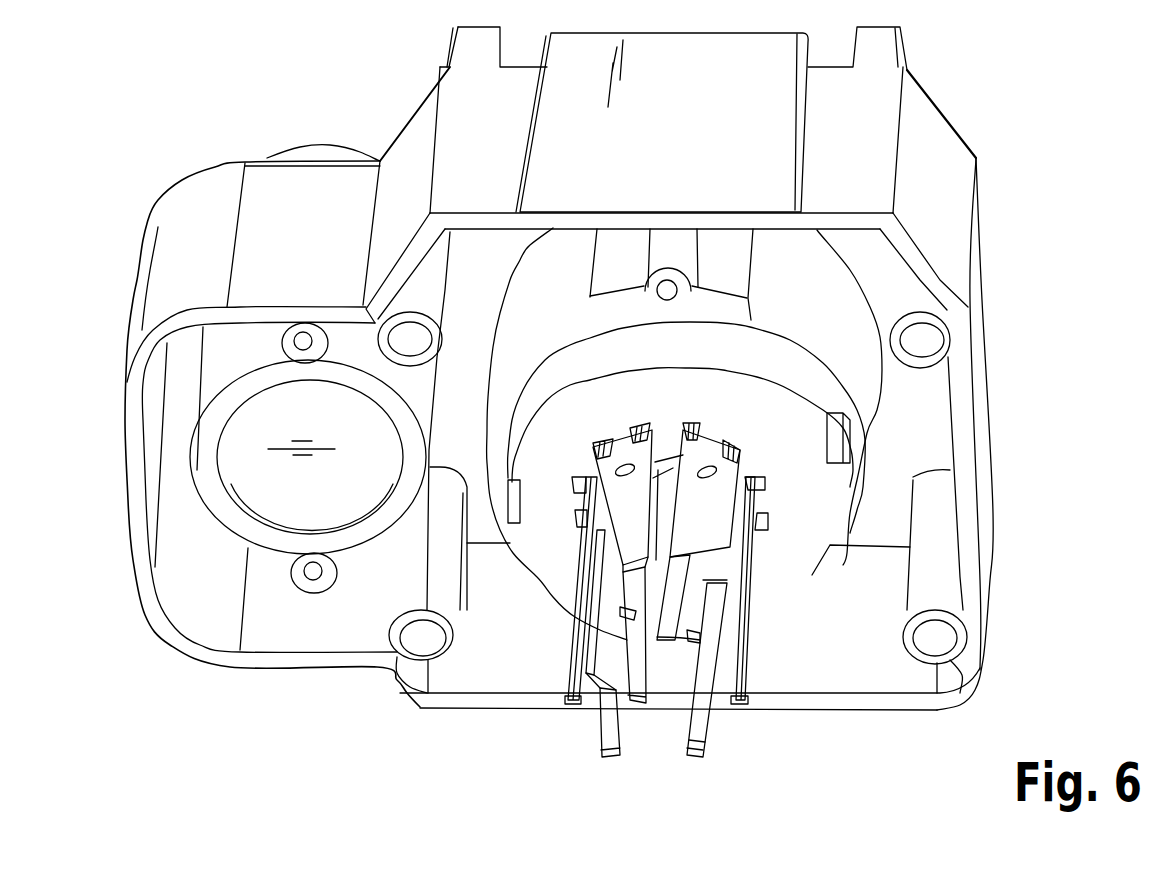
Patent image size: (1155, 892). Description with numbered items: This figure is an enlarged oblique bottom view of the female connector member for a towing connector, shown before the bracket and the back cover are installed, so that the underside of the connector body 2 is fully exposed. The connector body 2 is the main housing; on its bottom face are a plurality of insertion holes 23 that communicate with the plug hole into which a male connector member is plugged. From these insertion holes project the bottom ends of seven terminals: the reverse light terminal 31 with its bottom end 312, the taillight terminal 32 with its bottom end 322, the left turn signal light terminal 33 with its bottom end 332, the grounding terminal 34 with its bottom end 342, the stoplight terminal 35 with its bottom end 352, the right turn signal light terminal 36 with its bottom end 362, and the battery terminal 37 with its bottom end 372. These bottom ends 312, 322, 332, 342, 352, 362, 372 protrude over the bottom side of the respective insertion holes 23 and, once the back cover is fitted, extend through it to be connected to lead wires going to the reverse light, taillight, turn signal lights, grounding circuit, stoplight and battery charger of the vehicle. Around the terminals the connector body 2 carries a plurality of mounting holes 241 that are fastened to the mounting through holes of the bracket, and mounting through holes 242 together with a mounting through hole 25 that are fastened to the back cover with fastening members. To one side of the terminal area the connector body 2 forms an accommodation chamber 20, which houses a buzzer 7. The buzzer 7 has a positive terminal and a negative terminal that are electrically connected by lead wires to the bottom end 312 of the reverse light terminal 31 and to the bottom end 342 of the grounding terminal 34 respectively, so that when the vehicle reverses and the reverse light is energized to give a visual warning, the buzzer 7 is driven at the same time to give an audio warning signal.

The connector body 2 is at (953, 99).
The buzzer 7 is at (250, 468).
The accommodation chamber 20 is at (262, 519).
The insertion holes 23 is at (738, 478).
The mounting through hole 25 is at (668, 280).
The mounting holes 241 is at (420, 316).
The mounting through holes 242 is at (303, 328).
The reverse light terminal 31 is at (640, 585).
The bottom end of reverse light terminal 312 is at (638, 704).
The taillight terminal 32 is at (730, 470).
The bottom end of taillight terminal 322 is at (695, 628).
The left turn signal light terminal 33 is at (750, 602).
The bottom end of left turn signal light terminal 332 is at (738, 702).
The grounding terminal 34 is at (704, 662).
The bottom end of grounding terminal 342 is at (693, 758).
The stoplight terminal 35 is at (590, 668).
The bottom end of stoplight terminal 352 is at (613, 758).
The right turn signal light terminal 36 is at (585, 578).
The bottom end of right turn signal light terminal 362 is at (567, 695).
The battery terminal 37 is at (660, 480).
The bottom end of battery terminal 372 is at (620, 615).